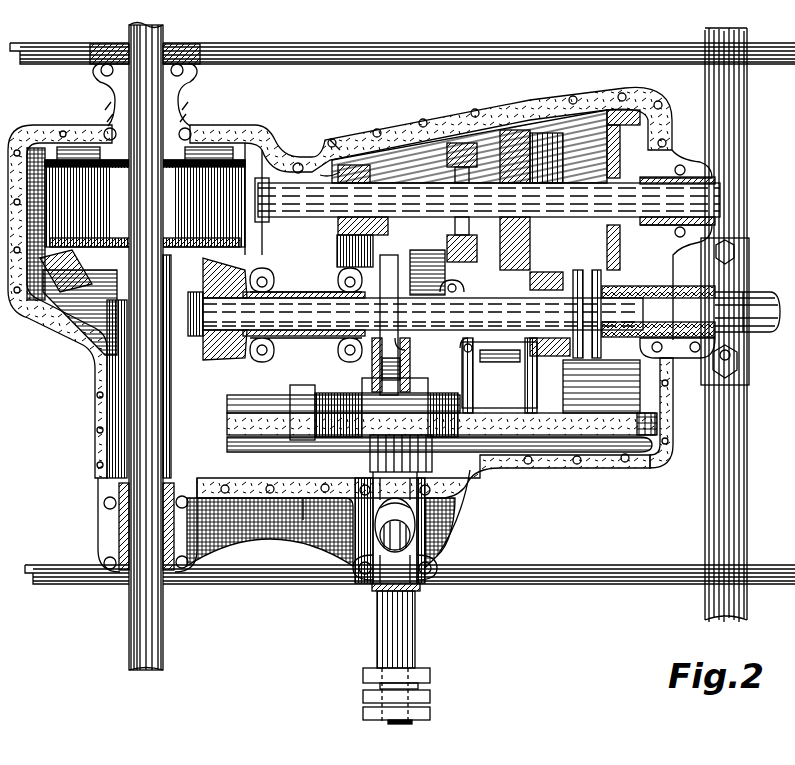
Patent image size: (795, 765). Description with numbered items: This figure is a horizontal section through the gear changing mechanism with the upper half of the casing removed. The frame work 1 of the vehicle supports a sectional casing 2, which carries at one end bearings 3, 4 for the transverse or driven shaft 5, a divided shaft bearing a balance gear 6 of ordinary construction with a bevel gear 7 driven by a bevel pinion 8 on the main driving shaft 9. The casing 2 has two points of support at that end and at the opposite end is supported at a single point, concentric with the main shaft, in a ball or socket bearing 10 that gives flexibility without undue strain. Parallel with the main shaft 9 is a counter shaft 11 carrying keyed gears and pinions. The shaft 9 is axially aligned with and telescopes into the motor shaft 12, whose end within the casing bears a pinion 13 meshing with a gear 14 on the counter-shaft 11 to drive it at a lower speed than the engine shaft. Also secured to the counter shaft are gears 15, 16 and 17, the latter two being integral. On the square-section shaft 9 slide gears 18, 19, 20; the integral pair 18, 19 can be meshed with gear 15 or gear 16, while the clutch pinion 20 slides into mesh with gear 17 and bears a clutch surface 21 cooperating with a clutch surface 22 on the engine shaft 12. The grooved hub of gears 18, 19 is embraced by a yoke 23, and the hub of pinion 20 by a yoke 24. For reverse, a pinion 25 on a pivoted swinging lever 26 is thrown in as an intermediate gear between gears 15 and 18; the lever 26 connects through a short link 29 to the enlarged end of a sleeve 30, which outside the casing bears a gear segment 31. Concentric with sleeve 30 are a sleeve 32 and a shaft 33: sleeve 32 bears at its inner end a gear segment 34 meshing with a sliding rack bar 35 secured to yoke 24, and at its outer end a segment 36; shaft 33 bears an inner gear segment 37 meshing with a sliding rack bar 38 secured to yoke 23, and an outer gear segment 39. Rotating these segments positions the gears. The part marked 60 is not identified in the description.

The frame work 1 is at (262, 100).
The casing 2 is at (650, 470).
The bearing 3 is at (123, 533).
The bearing 4 is at (160, 88).
The transverse or driven shaft 5 is at (165, 455).
The balance gear 6 is at (136, 223).
The bevel gear 7 is at (60, 300).
The bevel pinion 8 is at (205, 340).
The main driving shaft 9 is at (268, 305).
The ball or socket bearing 10 is at (722, 345).
The counter shaft 11 is at (548, 200).
The motor shaft 12 is at (758, 293).
The pinion 13 is at (630, 360).
The gear 14 is at (661, 190).
The gear 15 is at (325, 145).
The gear 16 is at (450, 145).
The gear 17 is at (513, 130).
The gear 18 is at (380, 360).
The gear 19 is at (445, 272).
The clutch pinion 20 is at (548, 275).
The clutch surface 21 is at (578, 358).
The clutch surface 22 is at (597, 358).
The yoke 23 is at (470, 345).
The yoke 24 is at (527, 372).
The pinion 25 is at (340, 292).
The swinging lever 26 is at (300, 540).
The short link 29 is at (470, 478).
The sleeve 30 is at (432, 562).
The gear segment 31 is at (420, 676).
The sleeve 32 is at (415, 530).
The shaft 33 is at (440, 545).
The gear segment 34 is at (422, 420).
The sliding rack bar 35 is at (228, 418).
The segment 36 is at (375, 697).
The gear segment 37 is at (375, 412).
The sliding rack bar 38 is at (292, 395).
The gear segment 39 is at (375, 715).
The gears 60 is at (383, 160).